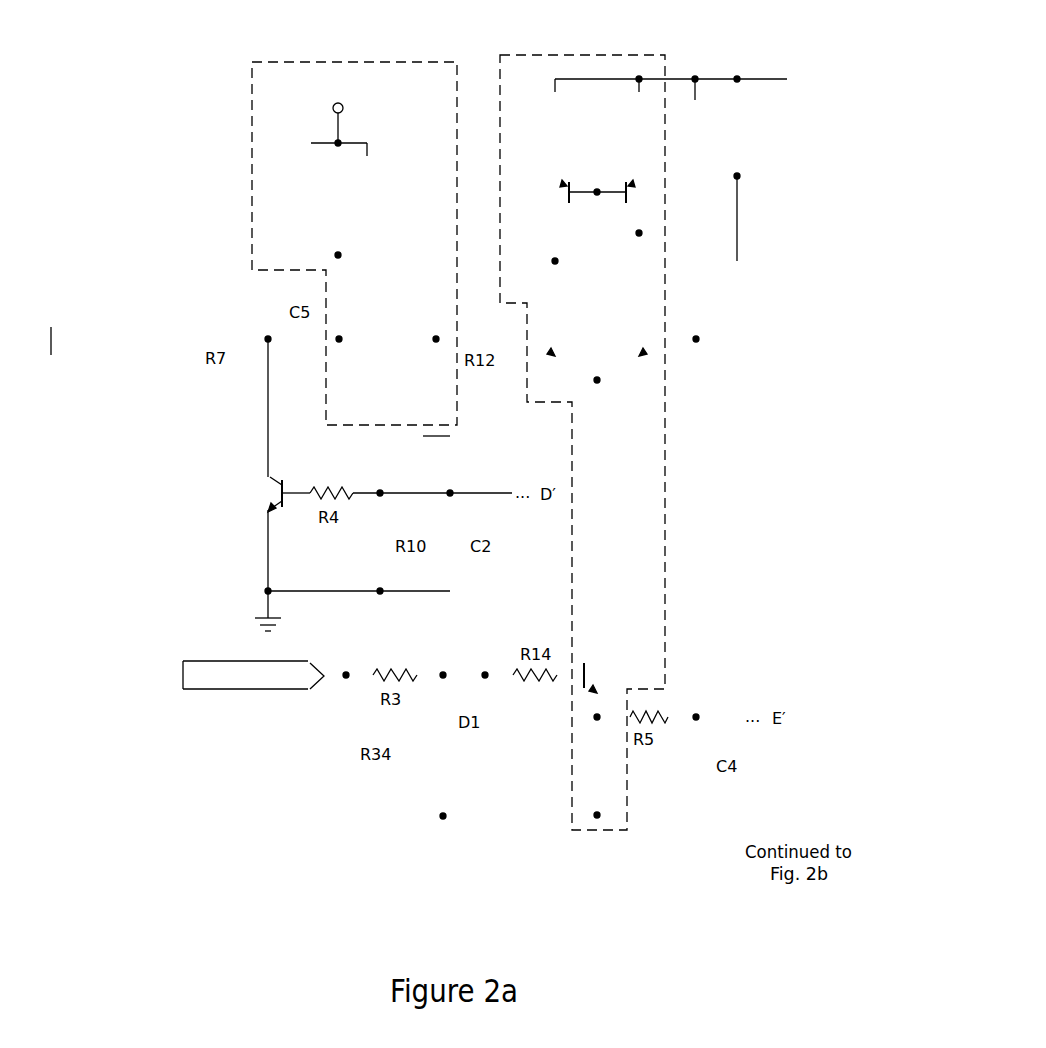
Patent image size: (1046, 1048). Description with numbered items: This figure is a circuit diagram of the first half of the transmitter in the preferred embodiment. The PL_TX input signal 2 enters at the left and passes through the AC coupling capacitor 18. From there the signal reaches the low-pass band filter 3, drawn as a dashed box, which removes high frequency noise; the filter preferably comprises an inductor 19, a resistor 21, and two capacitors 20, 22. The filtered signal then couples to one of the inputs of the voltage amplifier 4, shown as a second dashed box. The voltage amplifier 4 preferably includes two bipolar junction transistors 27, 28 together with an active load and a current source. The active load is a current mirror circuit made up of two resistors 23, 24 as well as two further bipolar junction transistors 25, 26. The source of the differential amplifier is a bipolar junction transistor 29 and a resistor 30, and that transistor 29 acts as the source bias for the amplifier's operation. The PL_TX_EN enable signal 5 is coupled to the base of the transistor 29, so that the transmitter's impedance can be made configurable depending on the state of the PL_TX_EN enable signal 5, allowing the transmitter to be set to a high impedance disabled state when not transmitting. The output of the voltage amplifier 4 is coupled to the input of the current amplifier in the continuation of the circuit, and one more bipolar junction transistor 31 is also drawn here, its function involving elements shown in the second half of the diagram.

The PL_TX input signal 2 is at (81, 316).
The low-pass band filter 3 is at (354, 221).
The voltage amplifier 4 is at (668, 423).
The PL_TX_EN enable signal 5 is at (252, 653).
The AC coupling capacitor C3 18 is at (149, 353).
The inductor L1 19 is at (288, 174).
The capacitor C1 20 is at (394, 174).
The resistor R11 21 is at (390, 327).
The capacitor C12 22 is at (452, 437).
The resistor R16 23 is at (555, 111).
The resistor R17 24 is at (617, 131).
The BJT Q14 25 is at (573, 217).
The BJT Q15 26 is at (668, 201).
The BJT Q1 27 is at (570, 320).
The BJT Q2 28 is at (659, 329).
The BJT Q4 29 is at (610, 658).
The resistor R15 30 is at (608, 784).
The BJT Q8 31 is at (270, 531).